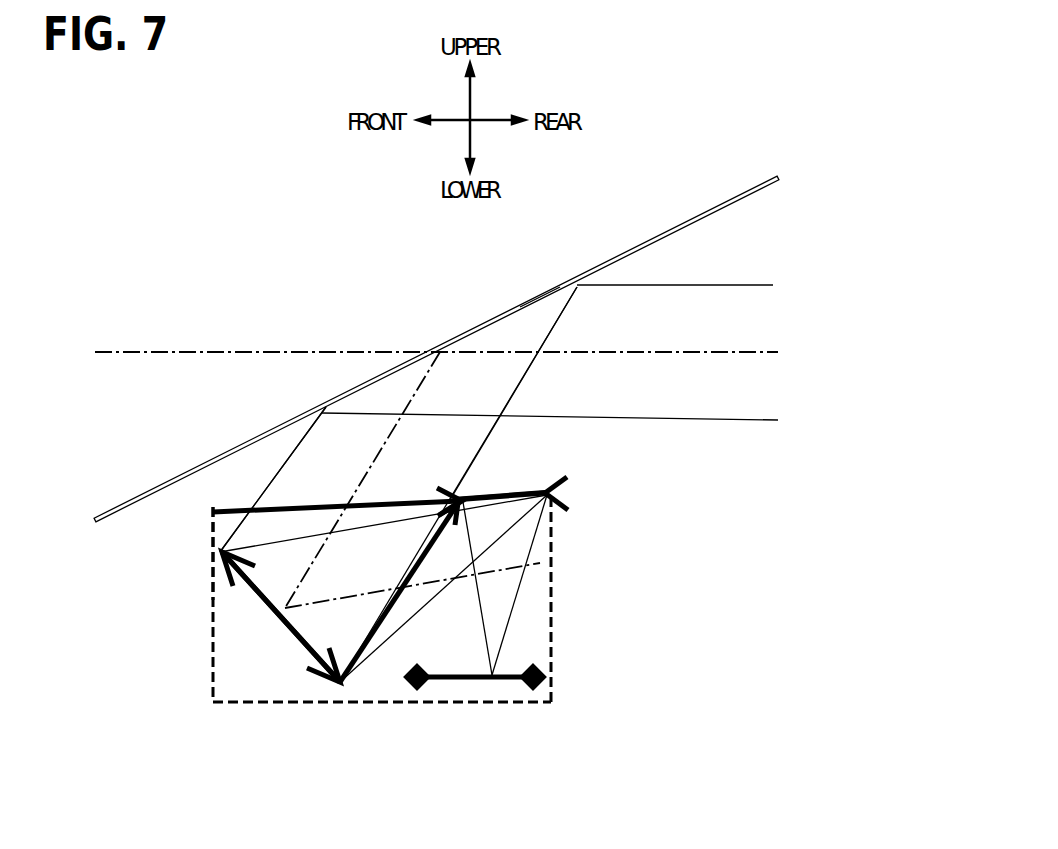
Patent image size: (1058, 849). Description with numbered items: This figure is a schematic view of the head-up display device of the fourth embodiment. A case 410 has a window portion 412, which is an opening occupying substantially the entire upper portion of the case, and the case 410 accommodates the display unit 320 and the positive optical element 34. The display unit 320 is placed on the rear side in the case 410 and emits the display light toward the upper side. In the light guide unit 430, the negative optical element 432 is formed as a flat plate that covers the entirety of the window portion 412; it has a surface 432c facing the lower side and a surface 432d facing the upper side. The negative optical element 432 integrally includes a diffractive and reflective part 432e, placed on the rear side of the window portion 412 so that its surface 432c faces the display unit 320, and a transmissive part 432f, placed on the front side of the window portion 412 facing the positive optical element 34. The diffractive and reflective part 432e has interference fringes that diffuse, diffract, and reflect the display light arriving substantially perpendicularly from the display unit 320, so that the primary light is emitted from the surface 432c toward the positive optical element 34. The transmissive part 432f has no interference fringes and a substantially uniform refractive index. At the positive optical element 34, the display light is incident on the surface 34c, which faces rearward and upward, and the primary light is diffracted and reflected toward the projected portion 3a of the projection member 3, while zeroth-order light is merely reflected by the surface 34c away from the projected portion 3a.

The windshield 3 is at (678, 227).
The projected portion 3a is at (541, 304).
The window portion 412 is at (213, 507).
The case 410 is at (548, 677).
The display unit 320 is at (513, 680).
The light guide unit 430 is at (290, 637).
The positive optical element 34 is at (290, 637).
The surface 34c is at (315, 648).
The negative optical element 432 is at (427, 297).
The surface 432c is at (477, 505).
The surface 432d is at (483, 493).
The diffractive and reflective part 432e is at (457, 500).
The transmissive part 432f is at (308, 506).